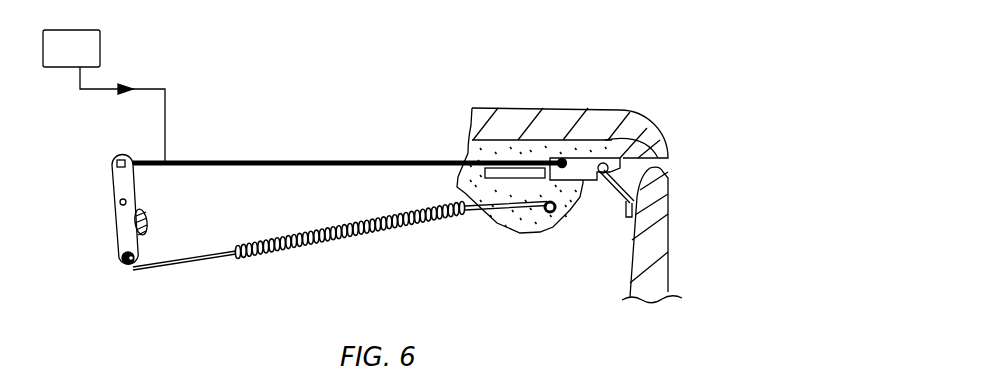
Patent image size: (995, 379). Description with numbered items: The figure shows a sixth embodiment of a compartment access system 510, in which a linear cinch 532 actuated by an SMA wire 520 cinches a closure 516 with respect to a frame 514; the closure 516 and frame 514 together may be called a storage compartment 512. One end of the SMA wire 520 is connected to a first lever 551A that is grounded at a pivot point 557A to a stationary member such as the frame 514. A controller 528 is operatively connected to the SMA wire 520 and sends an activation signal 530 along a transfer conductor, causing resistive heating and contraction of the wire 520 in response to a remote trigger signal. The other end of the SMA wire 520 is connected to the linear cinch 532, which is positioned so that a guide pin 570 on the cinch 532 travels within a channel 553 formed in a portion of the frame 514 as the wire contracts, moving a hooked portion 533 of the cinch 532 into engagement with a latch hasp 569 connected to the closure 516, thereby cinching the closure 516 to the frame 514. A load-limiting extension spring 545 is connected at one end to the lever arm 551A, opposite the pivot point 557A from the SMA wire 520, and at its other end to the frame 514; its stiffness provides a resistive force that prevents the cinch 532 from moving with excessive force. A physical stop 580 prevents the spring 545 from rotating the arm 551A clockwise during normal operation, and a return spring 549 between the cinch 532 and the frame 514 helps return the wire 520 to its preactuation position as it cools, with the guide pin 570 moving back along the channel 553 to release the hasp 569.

The compartment access system 510 is at (717, 65).
The storage compartment 512 is at (540, 143).
The frame 514 is at (512, 108).
The closure 516 is at (668, 172).
The SMA wire 520 is at (203, 160).
The controller 528 is at (90, 60).
The activation signal 530 is at (98, 84).
The linear cinch 532 is at (585, 165).
The hooked portion 533 is at (632, 162).
The extension spring 545 is at (352, 243).
The return spring 549 is at (643, 118).
The first lever 551A is at (113, 183).
The channel 553 is at (503, 150).
The pivot point 557A is at (118, 202).
The latch hasp 569 is at (623, 197).
The guide pin 570 is at (558, 150).
The physical stop 580 is at (143, 235).